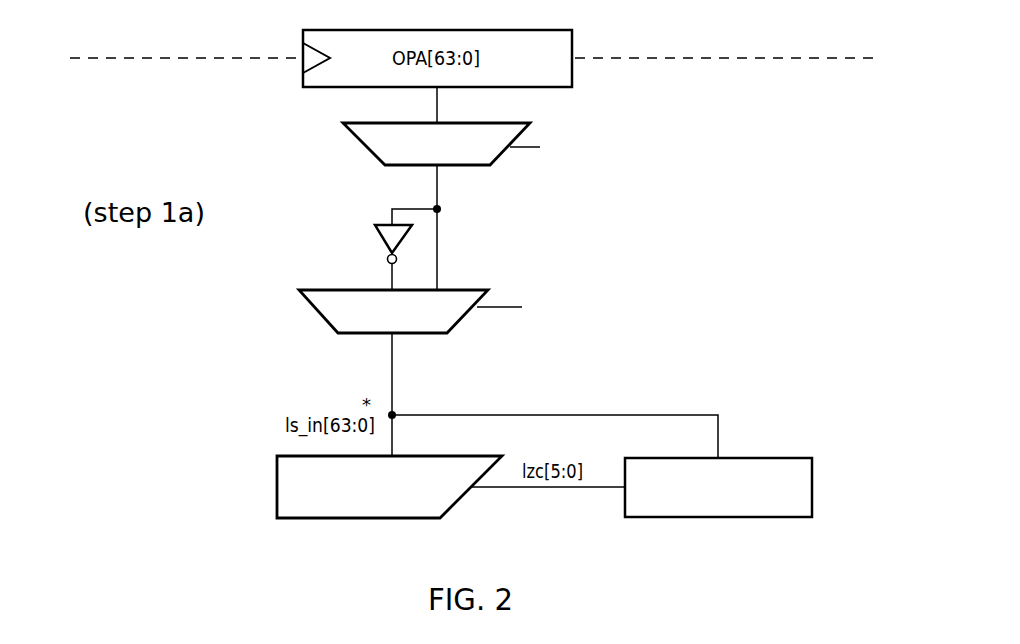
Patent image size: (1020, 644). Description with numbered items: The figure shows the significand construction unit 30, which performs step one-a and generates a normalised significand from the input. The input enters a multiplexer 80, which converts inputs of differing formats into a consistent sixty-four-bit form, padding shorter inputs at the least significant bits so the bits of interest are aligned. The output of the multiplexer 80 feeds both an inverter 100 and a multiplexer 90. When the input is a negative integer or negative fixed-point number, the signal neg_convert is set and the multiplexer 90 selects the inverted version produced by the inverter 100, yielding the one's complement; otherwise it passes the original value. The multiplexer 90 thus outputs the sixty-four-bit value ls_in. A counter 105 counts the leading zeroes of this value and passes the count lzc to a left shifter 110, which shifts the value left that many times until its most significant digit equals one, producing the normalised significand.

The significand construction unit 30 is at (746, 322).
The multiplexer 80 is at (360, 148).
The multiplexer 90 is at (322, 310).
The inverter 100 is at (378, 243).
The counter 105 is at (787, 441).
The left shifter 110 is at (273, 488).